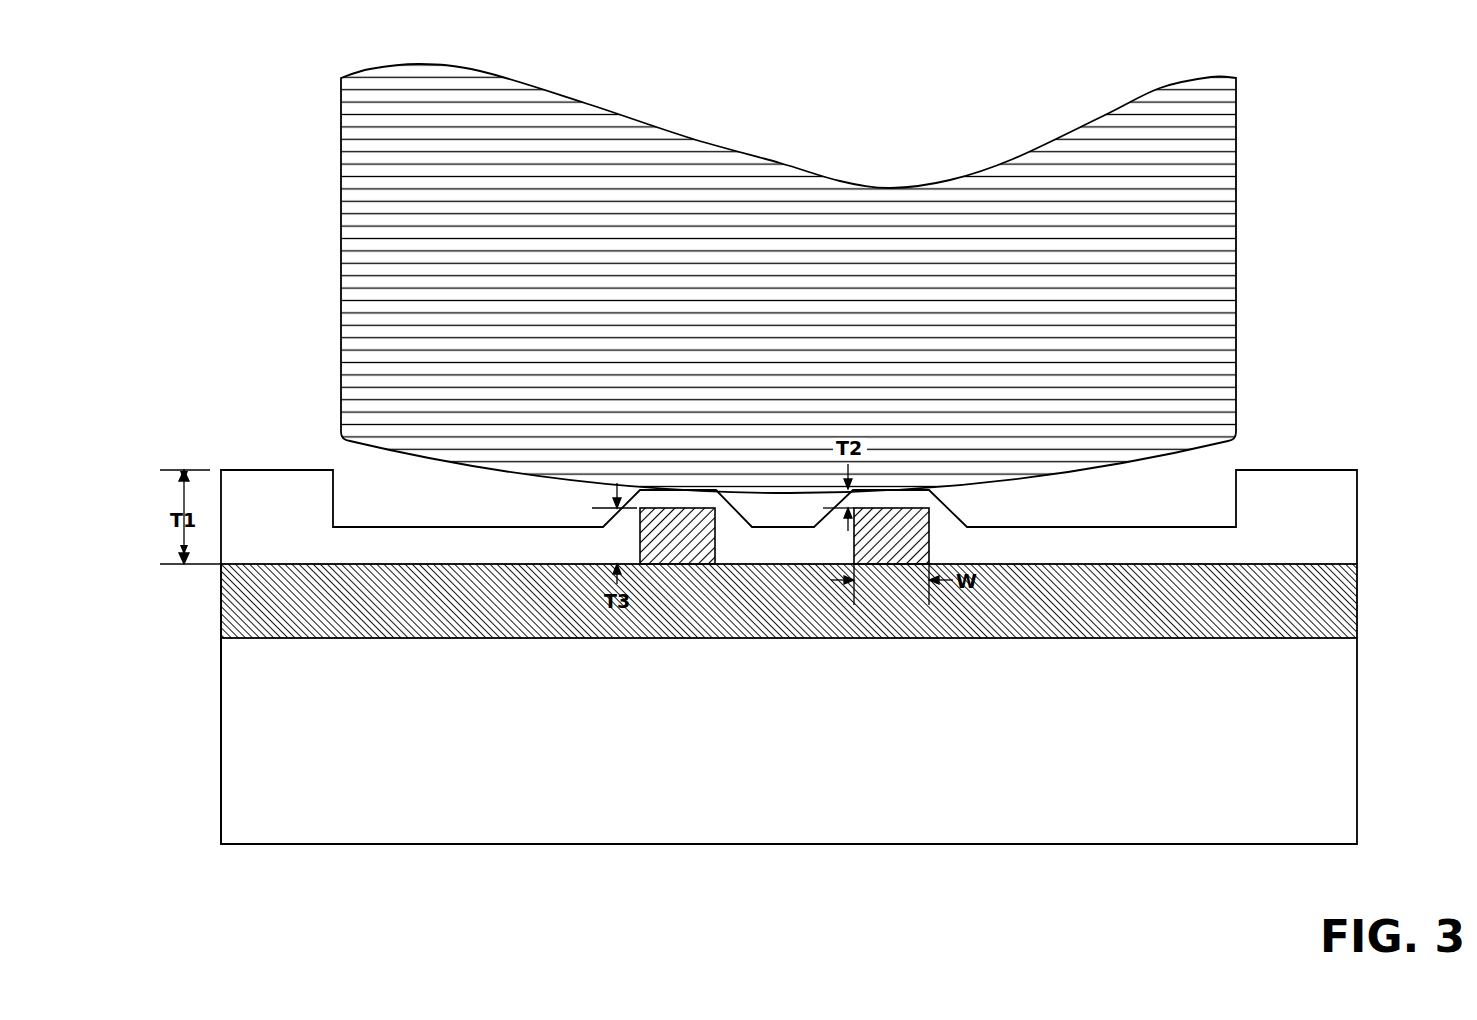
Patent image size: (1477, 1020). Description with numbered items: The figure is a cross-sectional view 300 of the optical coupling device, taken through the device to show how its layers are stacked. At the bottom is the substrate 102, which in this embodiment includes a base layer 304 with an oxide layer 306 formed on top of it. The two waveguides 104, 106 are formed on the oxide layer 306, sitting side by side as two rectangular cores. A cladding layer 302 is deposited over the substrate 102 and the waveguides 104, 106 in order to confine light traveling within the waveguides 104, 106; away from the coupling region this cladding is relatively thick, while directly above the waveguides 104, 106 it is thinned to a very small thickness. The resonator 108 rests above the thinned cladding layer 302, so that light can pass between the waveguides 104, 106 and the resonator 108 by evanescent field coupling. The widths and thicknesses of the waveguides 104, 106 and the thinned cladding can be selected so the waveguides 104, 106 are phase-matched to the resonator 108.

The cross-sectional view 300 is at (175, 85).
The resonator 108 is at (1237, 118).
The cladding layer 302 is at (1299, 470).
The waveguide 104 is at (722, 519).
The waveguide 106 is at (947, 521).
The oxide layer 306 is at (1357, 601).
The base layer 304 is at (1357, 740).
The substrate 102 is at (210, 564).